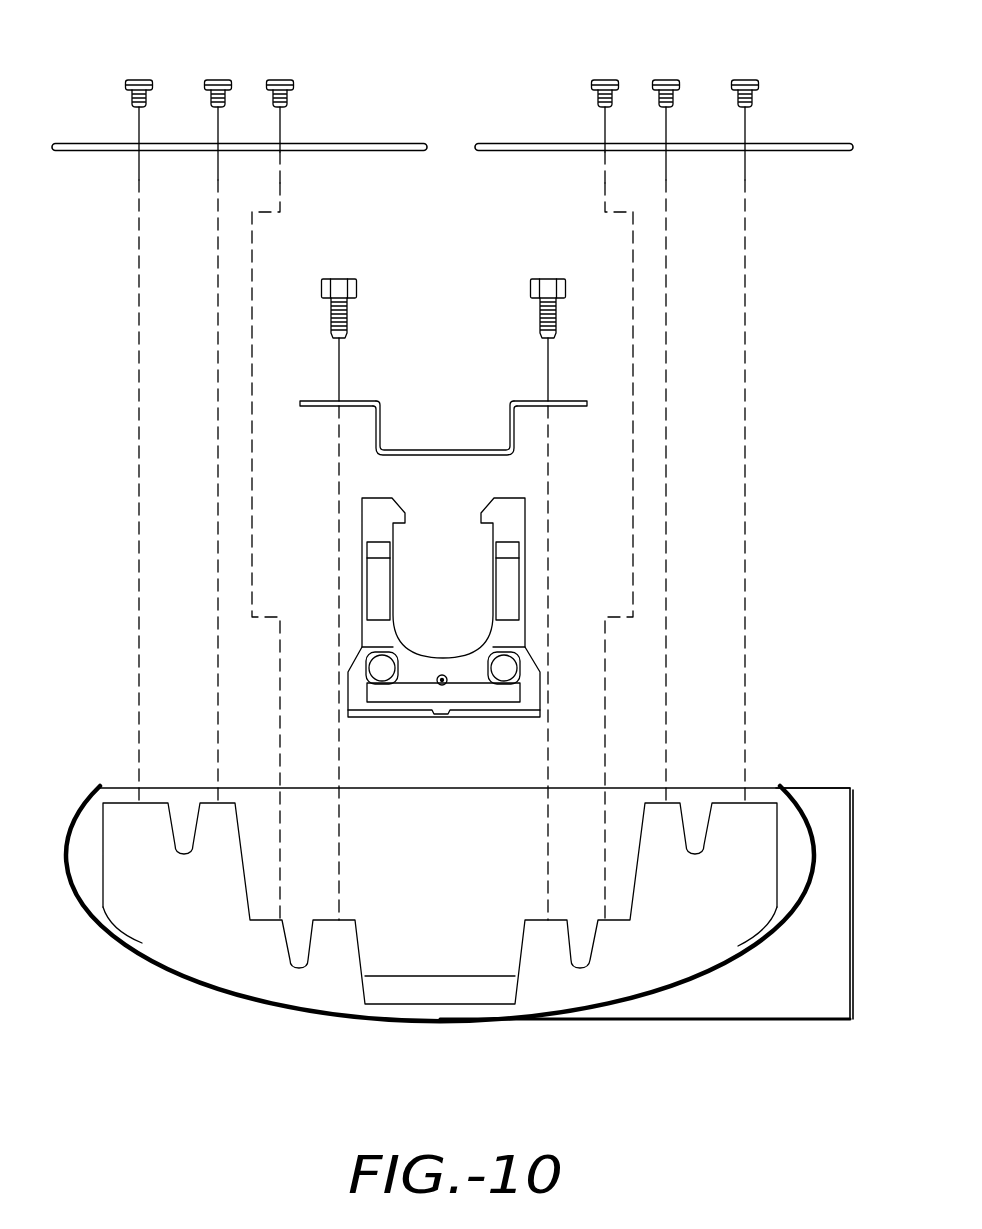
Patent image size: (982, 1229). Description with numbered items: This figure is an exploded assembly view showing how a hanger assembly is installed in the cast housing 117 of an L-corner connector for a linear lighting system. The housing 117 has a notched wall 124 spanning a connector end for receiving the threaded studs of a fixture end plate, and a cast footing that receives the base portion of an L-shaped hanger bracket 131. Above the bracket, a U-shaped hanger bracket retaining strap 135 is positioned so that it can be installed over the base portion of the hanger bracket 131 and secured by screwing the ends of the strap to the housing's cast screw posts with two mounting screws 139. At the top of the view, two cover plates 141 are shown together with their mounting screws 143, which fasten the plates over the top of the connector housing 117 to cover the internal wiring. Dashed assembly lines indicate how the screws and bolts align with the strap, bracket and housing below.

The cast housing 117 is at (752, 974).
The notched wall 124 is at (121, 816).
The L-shaped hanger bracket 131 is at (515, 529).
The U-shaped hanger bracket retaining strap 135 is at (443, 400).
The mounting screws 139 is at (548, 280).
The cover plates 141 is at (476, 146).
The mounting screws 143 is at (278, 80).